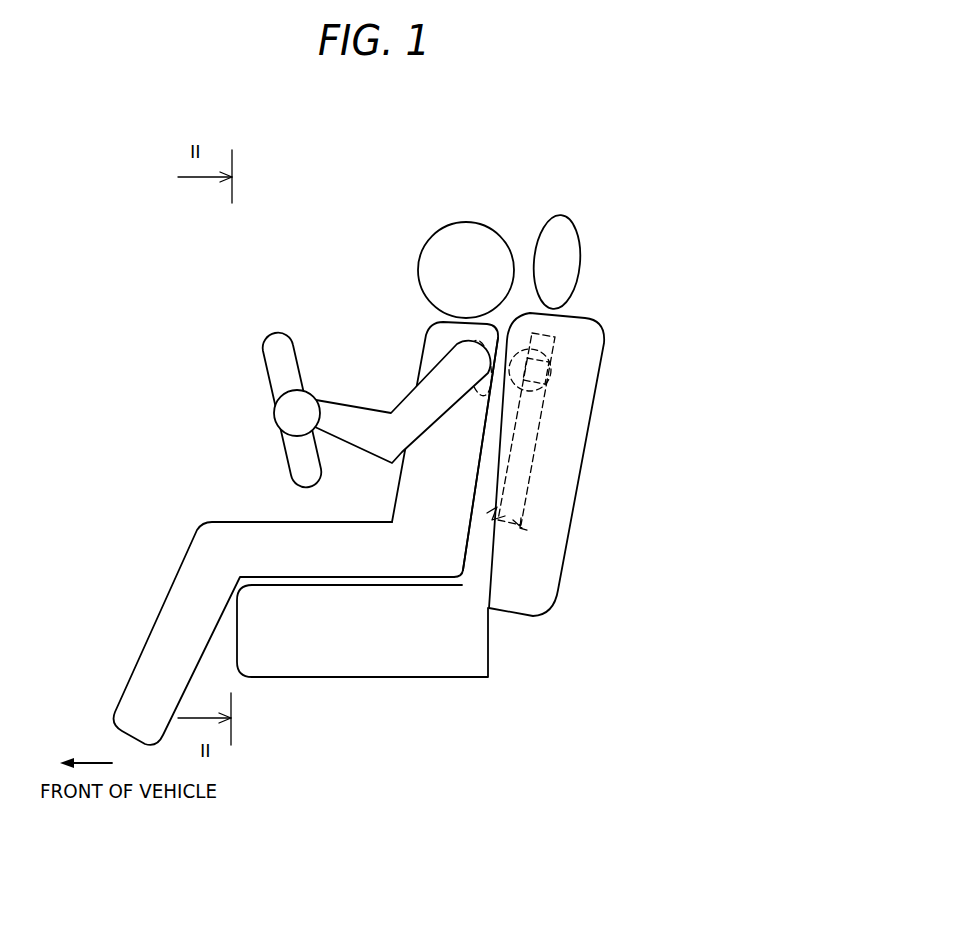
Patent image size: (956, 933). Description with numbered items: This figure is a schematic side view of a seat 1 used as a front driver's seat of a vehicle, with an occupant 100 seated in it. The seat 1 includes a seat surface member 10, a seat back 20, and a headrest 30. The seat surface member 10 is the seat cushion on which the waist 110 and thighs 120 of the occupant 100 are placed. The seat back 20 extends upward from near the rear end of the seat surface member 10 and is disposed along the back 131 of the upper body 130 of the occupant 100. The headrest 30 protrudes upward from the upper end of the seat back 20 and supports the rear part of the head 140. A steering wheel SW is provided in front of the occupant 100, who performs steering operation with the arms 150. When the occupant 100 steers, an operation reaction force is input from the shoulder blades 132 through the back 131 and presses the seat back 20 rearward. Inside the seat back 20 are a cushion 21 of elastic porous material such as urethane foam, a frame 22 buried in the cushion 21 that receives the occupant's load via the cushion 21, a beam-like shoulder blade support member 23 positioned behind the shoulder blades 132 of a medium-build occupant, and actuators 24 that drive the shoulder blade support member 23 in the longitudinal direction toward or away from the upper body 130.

The seat 1 is at (496, 441).
The seat surface member 10 is at (365, 662).
The seat back 20 is at (597, 362).
The cushion 21 is at (493, 487).
The frame 22 is at (530, 458).
The shoulder blade support member 23 is at (542, 355).
The actuators 24 is at (552, 370).
The headrest 30 is at (568, 223).
The occupant 100 is at (398, 442).
The waist 110 is at (435, 565).
The thighs 120 is at (283, 565).
The upper body 130 is at (422, 368).
The back 131 is at (488, 398).
The shoulder blades 132 is at (492, 345).
The head 140 is at (455, 230).
The arms 150 is at (327, 436).
The steering wheel SW is at (272, 378).